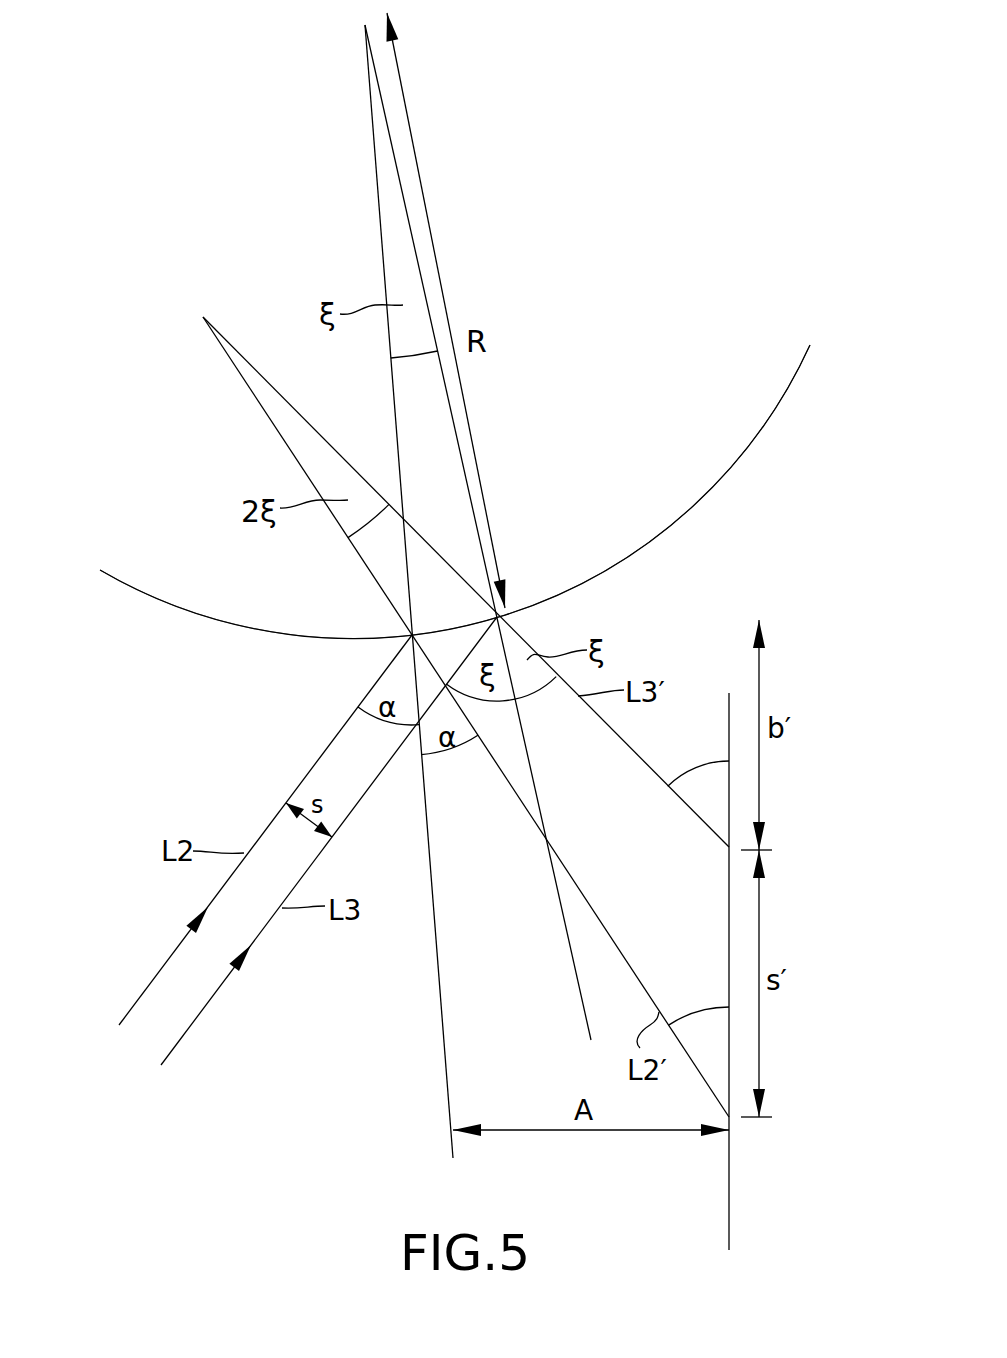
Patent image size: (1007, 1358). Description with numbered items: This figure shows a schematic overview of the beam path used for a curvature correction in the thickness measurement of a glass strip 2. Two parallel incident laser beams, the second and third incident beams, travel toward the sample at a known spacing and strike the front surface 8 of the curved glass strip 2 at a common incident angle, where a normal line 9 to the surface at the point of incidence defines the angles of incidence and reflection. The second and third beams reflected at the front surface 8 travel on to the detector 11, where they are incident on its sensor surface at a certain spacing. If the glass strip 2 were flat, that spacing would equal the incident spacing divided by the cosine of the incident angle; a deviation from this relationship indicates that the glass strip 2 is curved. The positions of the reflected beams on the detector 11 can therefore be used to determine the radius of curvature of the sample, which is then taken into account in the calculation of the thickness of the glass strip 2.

The glass strip 2 is at (181, 581).
The front surface 8 is at (173, 607).
The normal line 9 is at (444, 1006).
The detector 11 is at (729, 733).